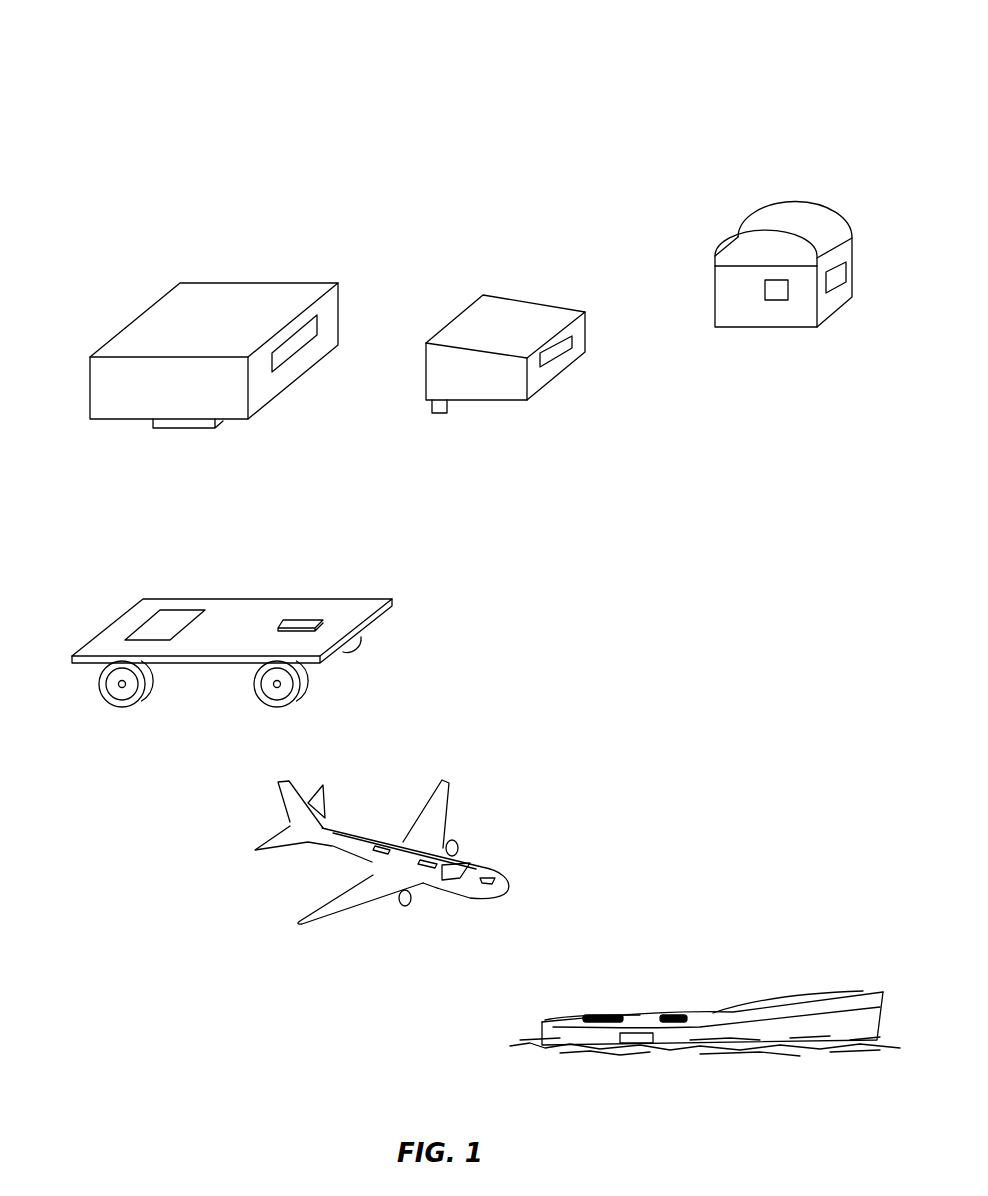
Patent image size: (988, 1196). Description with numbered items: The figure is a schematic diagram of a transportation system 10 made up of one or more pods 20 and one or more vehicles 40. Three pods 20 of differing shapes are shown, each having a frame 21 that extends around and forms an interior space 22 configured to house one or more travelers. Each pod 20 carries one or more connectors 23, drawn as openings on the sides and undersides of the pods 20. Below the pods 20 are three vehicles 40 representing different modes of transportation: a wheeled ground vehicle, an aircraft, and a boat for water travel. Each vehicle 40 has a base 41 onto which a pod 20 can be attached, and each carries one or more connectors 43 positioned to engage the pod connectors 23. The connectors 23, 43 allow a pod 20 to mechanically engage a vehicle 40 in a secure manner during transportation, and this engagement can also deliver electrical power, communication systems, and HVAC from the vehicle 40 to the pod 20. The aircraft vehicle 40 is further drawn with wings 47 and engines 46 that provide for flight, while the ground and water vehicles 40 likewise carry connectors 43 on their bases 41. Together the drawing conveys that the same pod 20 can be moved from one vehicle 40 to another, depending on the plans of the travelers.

The transportation system 10 is at (228, 125).
The pod 20 is at (466, 302).
The frame 21 is at (90, 383).
The interior space 22 is at (253, 300).
The connector 23 is at (290, 348).
The vehicle 40 is at (88, 610).
The base 41 is at (245, 643).
The connector 43 is at (312, 623).
The engine 46 is at (162, 620).
The wing 47 is at (430, 810).